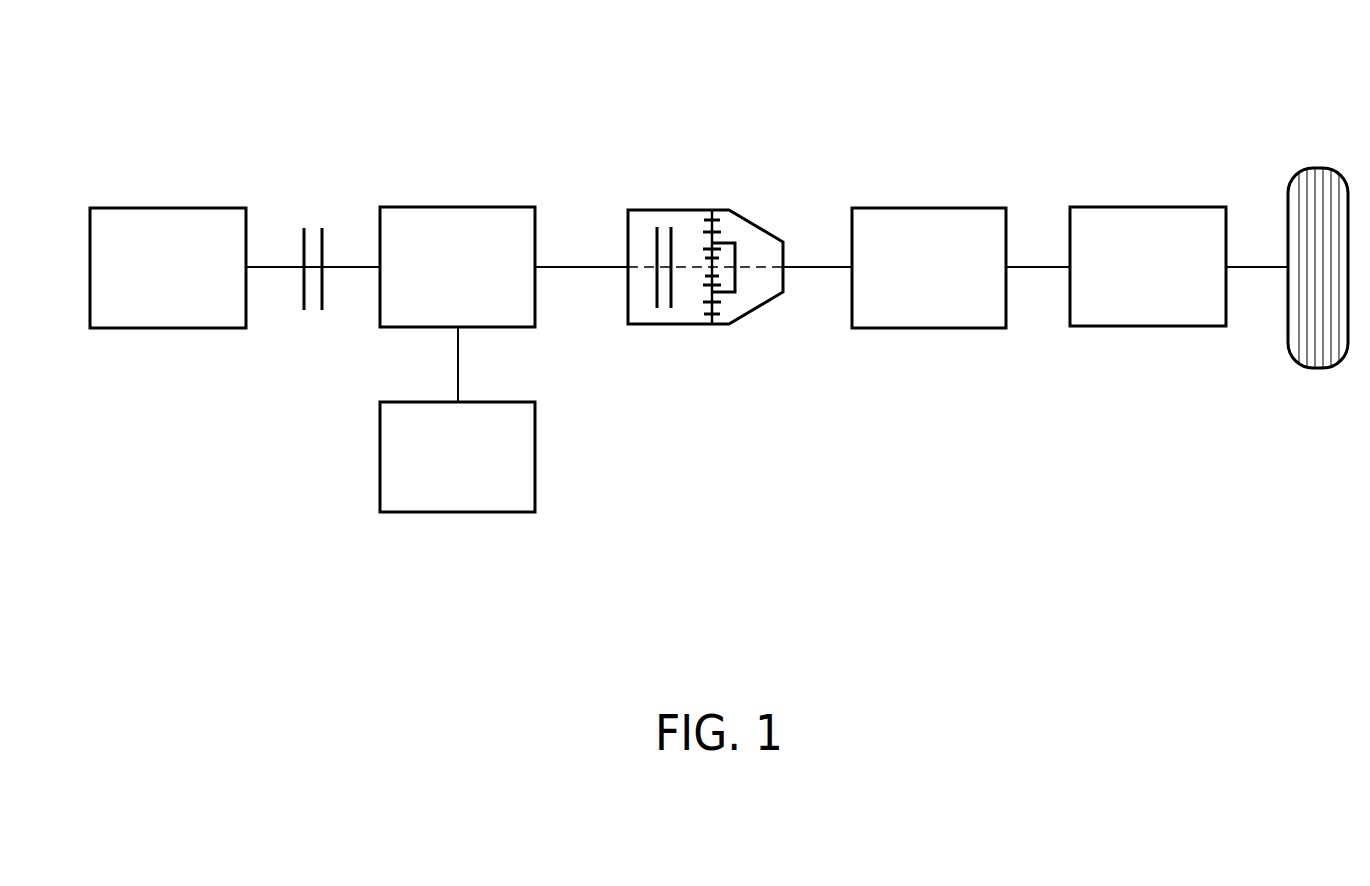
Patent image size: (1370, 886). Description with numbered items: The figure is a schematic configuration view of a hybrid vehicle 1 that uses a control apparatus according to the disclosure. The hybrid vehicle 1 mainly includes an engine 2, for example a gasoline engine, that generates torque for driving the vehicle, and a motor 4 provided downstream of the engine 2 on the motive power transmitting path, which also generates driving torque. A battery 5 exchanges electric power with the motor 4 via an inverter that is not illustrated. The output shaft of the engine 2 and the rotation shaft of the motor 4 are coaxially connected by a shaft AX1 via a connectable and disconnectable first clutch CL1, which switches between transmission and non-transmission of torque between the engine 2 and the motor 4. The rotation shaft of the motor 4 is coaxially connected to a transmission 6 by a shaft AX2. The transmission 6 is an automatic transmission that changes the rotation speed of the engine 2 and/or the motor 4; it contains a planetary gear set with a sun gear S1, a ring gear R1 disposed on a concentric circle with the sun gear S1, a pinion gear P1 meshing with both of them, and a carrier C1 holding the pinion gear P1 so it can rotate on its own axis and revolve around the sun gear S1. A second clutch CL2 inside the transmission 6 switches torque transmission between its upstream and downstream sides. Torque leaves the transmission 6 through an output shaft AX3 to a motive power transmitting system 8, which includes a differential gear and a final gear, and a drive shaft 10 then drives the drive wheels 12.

The hybrid vehicle 1 is at (811, 79).
The engine 2 is at (168, 206).
The motor 4 is at (455, 206).
The battery 5 is at (465, 513).
The transmission 6 is at (696, 271).
The motive power transmitting system 8 is at (920, 207).
The drive shaft 10 is at (1153, 206).
The drive wheels 12 is at (1318, 168).
The shaft AX1 is at (349, 267).
The shaft AX2 is at (580, 265).
The output shaft AX3 is at (822, 267).
The first clutch CL1 is at (301, 298).
The second clutch CL2 is at (654, 297).
The pinion gear P1 is at (708, 247).
The ring gear R1 is at (711, 228).
The sun gear S1 is at (710, 272).
The carrier C1 is at (740, 253).